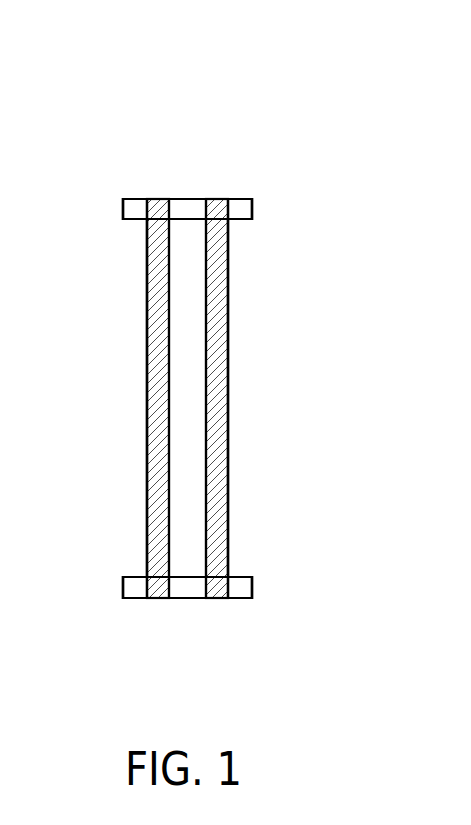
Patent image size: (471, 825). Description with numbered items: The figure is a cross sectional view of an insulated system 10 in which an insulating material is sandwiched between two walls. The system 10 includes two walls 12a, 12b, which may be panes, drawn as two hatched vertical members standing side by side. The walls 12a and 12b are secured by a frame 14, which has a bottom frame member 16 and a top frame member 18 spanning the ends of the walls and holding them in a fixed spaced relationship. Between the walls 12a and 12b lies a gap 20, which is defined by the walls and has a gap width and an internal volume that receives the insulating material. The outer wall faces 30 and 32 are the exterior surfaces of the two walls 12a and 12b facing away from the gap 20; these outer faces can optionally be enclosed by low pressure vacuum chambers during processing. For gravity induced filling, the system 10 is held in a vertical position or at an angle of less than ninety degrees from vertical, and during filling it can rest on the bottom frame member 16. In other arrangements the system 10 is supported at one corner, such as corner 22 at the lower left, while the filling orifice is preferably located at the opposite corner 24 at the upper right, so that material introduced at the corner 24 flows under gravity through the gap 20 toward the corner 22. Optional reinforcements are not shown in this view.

The system 10 is at (330, 118).
The frame 14 is at (178, 199).
The corner 24 is at (228, 200).
The top frame member 18 is at (252, 211).
The bottom frame member 16 is at (197, 598).
The corner 22 is at (143, 598).
The wall 12a is at (155, 350).
The wall 12b is at (218, 410).
The outer wall face 30 is at (146, 275).
The outer wall face 32 is at (228, 325).
The gap 20 is at (187, 498).